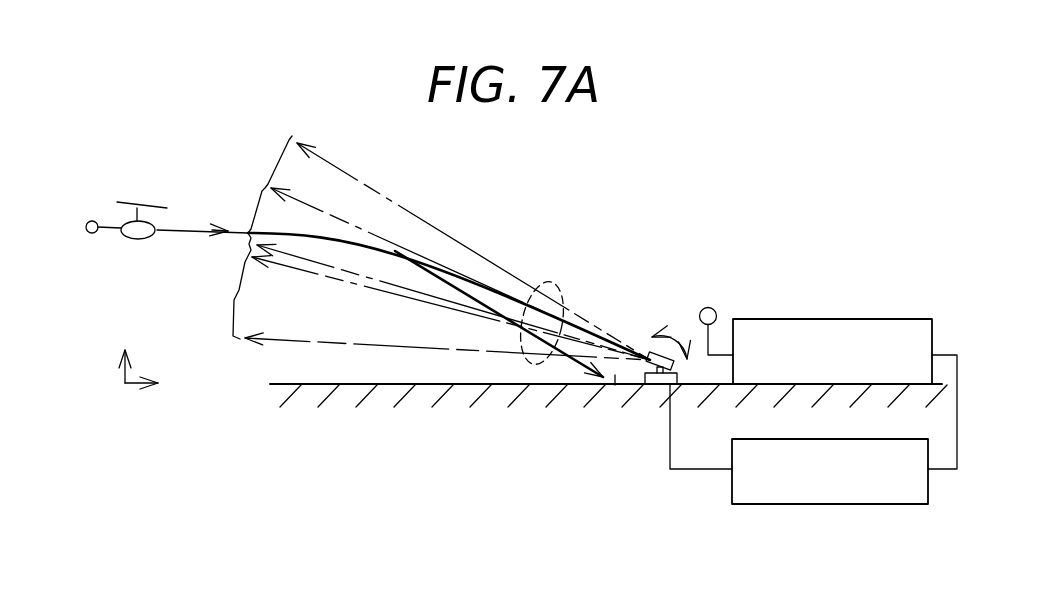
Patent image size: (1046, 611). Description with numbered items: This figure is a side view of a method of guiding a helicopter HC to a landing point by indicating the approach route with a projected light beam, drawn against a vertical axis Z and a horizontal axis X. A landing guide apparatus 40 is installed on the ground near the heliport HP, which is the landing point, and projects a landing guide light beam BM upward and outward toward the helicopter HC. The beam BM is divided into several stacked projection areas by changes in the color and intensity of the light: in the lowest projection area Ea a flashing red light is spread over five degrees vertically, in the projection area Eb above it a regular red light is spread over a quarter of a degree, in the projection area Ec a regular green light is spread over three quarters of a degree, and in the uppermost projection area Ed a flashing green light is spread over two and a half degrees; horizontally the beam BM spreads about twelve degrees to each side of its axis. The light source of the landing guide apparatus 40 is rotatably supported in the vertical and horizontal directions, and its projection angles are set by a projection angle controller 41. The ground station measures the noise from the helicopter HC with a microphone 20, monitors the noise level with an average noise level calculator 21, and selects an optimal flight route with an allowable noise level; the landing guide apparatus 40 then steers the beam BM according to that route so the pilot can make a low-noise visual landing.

The helicopter HC is at (132, 238).
The projection area Ed is at (435, 247).
The projection area Ec is at (425, 273).
The projection area Eb is at (416, 295).
The projection area Ea is at (416, 317).
The landing guide light beam BM is at (550, 282).
The heliport HP is at (612, 390).
The microphone 20 is at (708, 307).
The average noise level calculator 21 is at (828, 328).
The landing guide apparatus 40 is at (660, 387).
The projection angle controller 41 is at (833, 493).
The Z axis Z is at (131, 343).
The X axis X is at (155, 380).